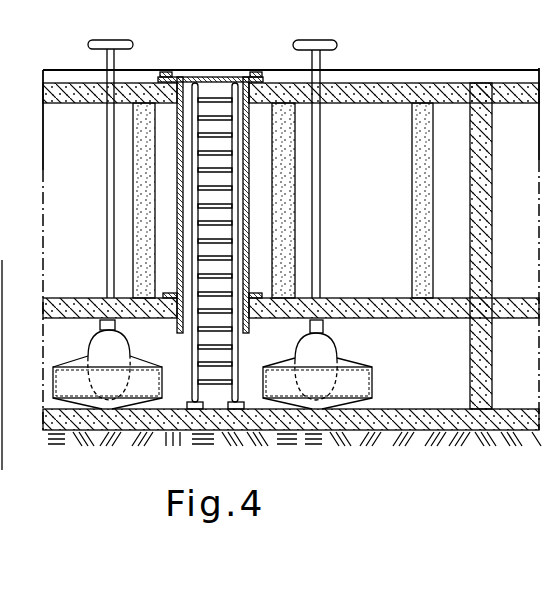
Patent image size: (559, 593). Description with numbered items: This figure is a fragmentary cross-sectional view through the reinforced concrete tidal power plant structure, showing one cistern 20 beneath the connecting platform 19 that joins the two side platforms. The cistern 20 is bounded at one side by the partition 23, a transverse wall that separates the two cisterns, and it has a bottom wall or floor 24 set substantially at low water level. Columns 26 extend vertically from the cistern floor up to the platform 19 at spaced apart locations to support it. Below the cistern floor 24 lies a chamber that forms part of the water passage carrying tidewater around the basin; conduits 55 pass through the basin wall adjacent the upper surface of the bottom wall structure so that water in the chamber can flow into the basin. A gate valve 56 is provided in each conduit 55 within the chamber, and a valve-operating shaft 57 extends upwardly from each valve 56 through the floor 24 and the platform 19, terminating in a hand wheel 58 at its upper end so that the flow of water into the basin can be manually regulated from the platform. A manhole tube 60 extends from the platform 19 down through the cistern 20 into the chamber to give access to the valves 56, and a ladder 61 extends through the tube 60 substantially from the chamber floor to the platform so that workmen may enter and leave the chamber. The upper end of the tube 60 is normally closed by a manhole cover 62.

The connecting platform 19 is at (45, 96).
The cistern 20 is at (53, 232).
The partition 23 is at (490, 262).
The bottom wall or floor 24 is at (63, 310).
The columns 26 is at (146, 213).
The conduits 55 is at (72, 390).
The gate valve 56 is at (108, 349).
The valve-operating shaft 57 is at (107, 252).
The hand wheel 58 is at (120, 42).
The manhole tubes 60 is at (176, 166).
The ladders 61 is at (239, 348).
The manhole covers 62 is at (202, 76).